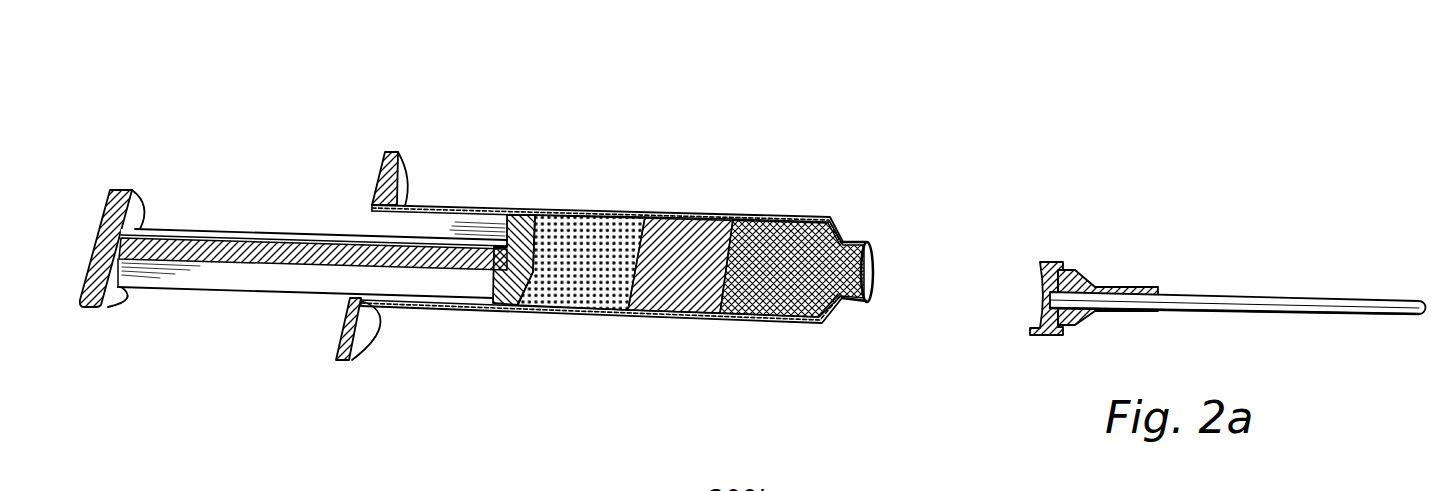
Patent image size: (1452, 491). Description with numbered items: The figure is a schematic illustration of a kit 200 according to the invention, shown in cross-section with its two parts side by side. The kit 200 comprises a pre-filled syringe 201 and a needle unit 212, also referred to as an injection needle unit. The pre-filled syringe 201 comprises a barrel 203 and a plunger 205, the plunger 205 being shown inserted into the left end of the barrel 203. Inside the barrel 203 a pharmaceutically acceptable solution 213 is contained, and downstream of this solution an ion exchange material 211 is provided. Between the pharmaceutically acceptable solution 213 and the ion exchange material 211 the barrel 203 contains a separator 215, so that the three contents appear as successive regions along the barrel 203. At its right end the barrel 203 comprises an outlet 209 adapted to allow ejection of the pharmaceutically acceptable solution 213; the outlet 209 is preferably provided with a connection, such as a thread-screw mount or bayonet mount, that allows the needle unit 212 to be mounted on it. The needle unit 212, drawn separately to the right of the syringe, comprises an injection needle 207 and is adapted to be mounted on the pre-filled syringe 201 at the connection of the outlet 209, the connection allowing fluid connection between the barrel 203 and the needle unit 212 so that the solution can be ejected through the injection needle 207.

The kit 200 is at (1420, 50).
The pre-filled syringe 201 is at (678, 150).
The barrel 203 is at (470, 207).
The plunger 205 is at (300, 240).
The injection needle 207 is at (1183, 293).
The outlet 209 is at (872, 250).
The ion exchange material 211 is at (772, 293).
The needle unit 212 is at (1293, 233).
The pharmaceutically acceptable solution 213 is at (590, 282).
The separator 215 is at (680, 288).